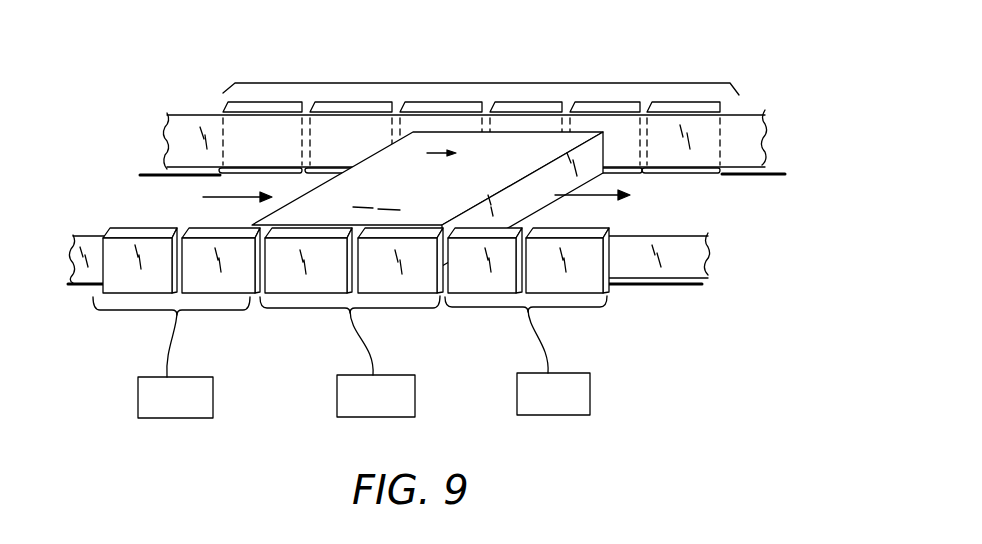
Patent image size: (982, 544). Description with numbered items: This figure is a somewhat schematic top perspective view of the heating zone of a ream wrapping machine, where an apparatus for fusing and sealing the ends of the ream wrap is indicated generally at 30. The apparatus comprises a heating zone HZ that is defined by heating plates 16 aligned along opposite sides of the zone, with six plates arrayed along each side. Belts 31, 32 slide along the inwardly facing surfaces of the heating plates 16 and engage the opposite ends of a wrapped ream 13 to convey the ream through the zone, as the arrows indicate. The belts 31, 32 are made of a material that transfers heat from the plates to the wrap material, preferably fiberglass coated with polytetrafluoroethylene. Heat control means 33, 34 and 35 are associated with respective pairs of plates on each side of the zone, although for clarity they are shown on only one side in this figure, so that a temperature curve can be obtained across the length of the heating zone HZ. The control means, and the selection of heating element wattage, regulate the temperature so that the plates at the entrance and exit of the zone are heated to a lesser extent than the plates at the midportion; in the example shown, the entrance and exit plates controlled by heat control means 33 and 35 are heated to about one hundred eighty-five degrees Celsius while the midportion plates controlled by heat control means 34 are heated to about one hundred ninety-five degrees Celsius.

The wrapped ream 13 is at (475, 158).
The heating plate 16 is at (421, 193).
The apparatus for fusing and sealing the ends of the ream wrap 30 is at (688, 298).
The belt 31 is at (745, 137).
The belt 32 is at (685, 253).
The heat control means 33 is at (192, 419).
The heat control means 34 is at (390, 417).
The heat control means 35 is at (570, 415).
The heating zone HZ is at (480, 82).